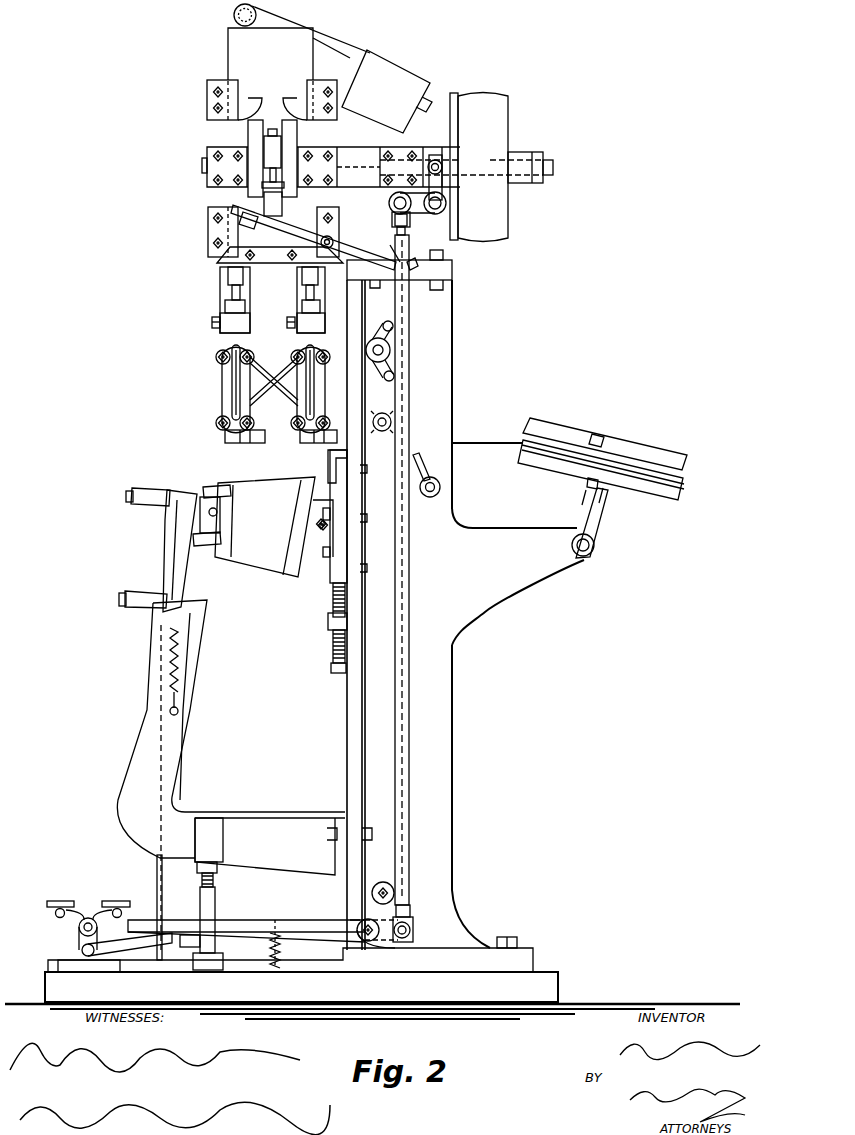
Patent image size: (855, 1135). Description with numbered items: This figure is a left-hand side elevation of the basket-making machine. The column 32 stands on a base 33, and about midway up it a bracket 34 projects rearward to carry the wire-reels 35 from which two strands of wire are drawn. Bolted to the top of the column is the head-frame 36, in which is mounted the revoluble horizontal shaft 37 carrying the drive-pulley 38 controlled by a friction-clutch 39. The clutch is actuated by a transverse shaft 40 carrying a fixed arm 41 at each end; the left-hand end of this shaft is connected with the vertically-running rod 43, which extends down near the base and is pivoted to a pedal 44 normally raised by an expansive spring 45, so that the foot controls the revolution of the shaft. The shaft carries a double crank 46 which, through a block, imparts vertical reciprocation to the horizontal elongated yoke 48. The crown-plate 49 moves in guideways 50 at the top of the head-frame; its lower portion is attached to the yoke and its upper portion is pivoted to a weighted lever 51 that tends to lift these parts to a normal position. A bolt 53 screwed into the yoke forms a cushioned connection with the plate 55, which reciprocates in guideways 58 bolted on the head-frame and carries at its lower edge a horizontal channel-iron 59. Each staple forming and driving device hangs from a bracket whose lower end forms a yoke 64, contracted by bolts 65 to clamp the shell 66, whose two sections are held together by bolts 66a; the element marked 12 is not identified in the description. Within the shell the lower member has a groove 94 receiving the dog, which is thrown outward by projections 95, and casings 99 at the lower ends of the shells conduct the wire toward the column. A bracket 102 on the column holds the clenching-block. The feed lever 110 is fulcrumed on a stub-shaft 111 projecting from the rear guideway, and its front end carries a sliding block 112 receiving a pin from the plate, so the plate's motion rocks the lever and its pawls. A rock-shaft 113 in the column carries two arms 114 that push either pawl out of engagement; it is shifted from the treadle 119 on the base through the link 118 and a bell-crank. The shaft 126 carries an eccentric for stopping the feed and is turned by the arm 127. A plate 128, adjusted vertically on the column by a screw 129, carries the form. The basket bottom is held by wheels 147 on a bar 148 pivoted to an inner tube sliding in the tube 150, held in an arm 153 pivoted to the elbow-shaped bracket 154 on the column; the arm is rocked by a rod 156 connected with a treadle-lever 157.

The hanger bolt 12 is at (240, 278).
The column 32 is at (442, 705).
The base 33 is at (538, 970).
The bracket 34 is at (530, 561).
The wire-reels 35 is at (683, 467).
The head-frame 36 is at (386, 237).
The revoluble horizontal shaft 37 is at (553, 172).
The drive-pulley 38 is at (461, 167).
The friction-clutch 39 is at (448, 110).
The shaft 40 is at (423, 217).
The fixed arm 41 is at (438, 190).
The vertically-running rod 43 is at (405, 592).
The pedal 44 is at (303, 932).
The expansive spring 45 is at (283, 956).
The double crank 46 is at (257, 152).
The horizontal elongated yoke 48 is at (268, 142).
The crown-plate 49 is at (270, 74).
The guideways 50 is at (213, 94).
The weighted lever 51 is at (323, 47).
The bolt 53 is at (284, 186).
The plate 55 is at (320, 229).
The guideways 58 is at (215, 222).
The channel-iron 59 is at (280, 254).
The yoke 64 is at (248, 321).
The bolts 65 is at (213, 318).
The shell 66 is at (222, 384).
The bolts 66a is at (218, 360).
The groove 94 is at (242, 420).
The projections 95 is at (218, 358).
The casings 99 is at (262, 440).
The bracket 102 is at (337, 483).
The lever 110 is at (390, 201).
The stub-shaft 111 is at (386, 246).
The sliding block 112 is at (384, 209).
The rock-shaft 113 is at (387, 375).
The arms 114 is at (390, 338).
The link 118 is at (130, 945).
The treadle 119 is at (92, 918).
The shaft 126 is at (431, 498).
The arm 127 is at (423, 458).
The plate 128 is at (340, 547).
The screw 129 is at (337, 663).
The wheels 147 is at (225, 489).
The bar 148 is at (206, 492).
The tube 150 is at (150, 491).
The arm 153 is at (166, 548).
The elbow-shaped bracket 154 is at (183, 730).
The rod 156 is at (158, 887).
The treadle-lever 157 is at (170, 942).